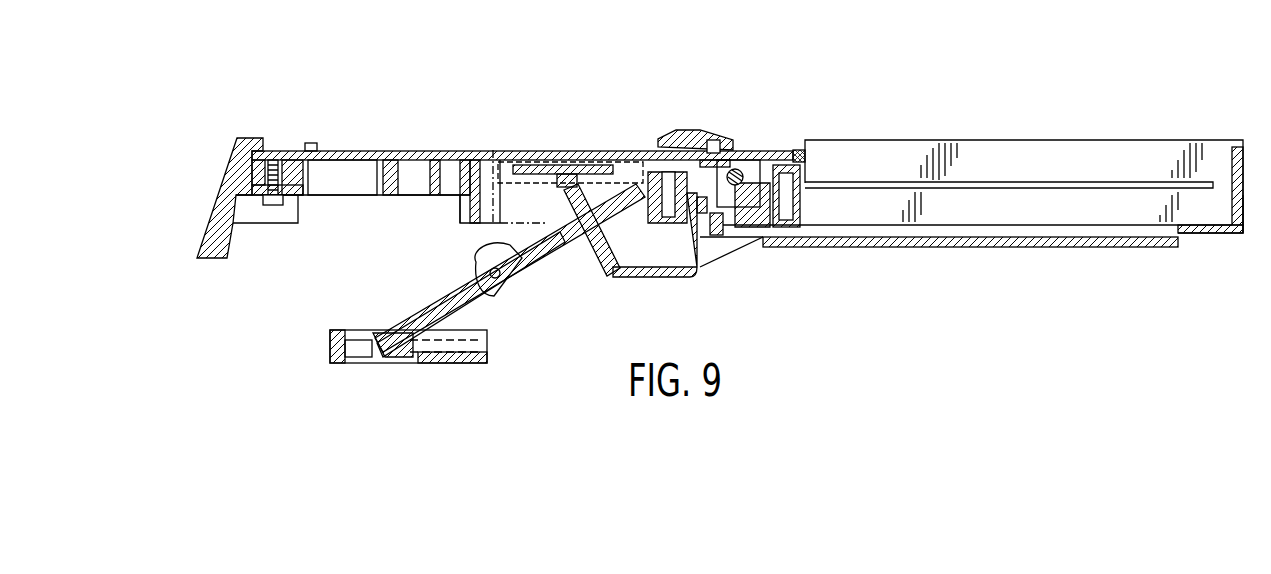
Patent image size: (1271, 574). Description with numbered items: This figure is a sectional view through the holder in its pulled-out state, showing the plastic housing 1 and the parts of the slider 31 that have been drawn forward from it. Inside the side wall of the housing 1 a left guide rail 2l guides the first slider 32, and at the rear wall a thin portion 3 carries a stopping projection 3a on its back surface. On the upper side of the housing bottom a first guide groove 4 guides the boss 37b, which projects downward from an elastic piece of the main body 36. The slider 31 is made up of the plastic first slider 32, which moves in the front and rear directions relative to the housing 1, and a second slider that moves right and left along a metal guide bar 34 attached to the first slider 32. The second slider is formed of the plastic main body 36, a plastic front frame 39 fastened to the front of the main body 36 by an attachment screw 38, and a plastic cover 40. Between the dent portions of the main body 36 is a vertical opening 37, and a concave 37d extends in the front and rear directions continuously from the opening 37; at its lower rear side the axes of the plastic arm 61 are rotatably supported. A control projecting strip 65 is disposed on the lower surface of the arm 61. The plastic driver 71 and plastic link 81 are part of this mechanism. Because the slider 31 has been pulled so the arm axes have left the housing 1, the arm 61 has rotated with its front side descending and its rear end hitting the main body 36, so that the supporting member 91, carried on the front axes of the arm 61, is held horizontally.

The housing 1 is at (929, 135).
The left guide rail 2l is at (1027, 180).
The thin portion 3 is at (1231, 155).
The stopping projection 3a is at (1246, 198).
The first guide groove 4 is at (951, 231).
The slider 31 is at (463, 146).
The first slider 32 is at (803, 212).
The guide bar 34 is at (736, 168).
The main body 36 is at (369, 150).
The opening 37 is at (497, 188).
The boss 37b is at (713, 238).
The concave 37d is at (473, 208).
The attachment screw 38 is at (270, 206).
The front frame 39 is at (221, 187).
The cover 40 is at (596, 152).
The arm 61 is at (523, 290).
The control projecting strip 65 is at (595, 247).
The driver 71 is at (544, 170).
The link 81 is at (487, 248).
The supporting member 91 is at (426, 375).